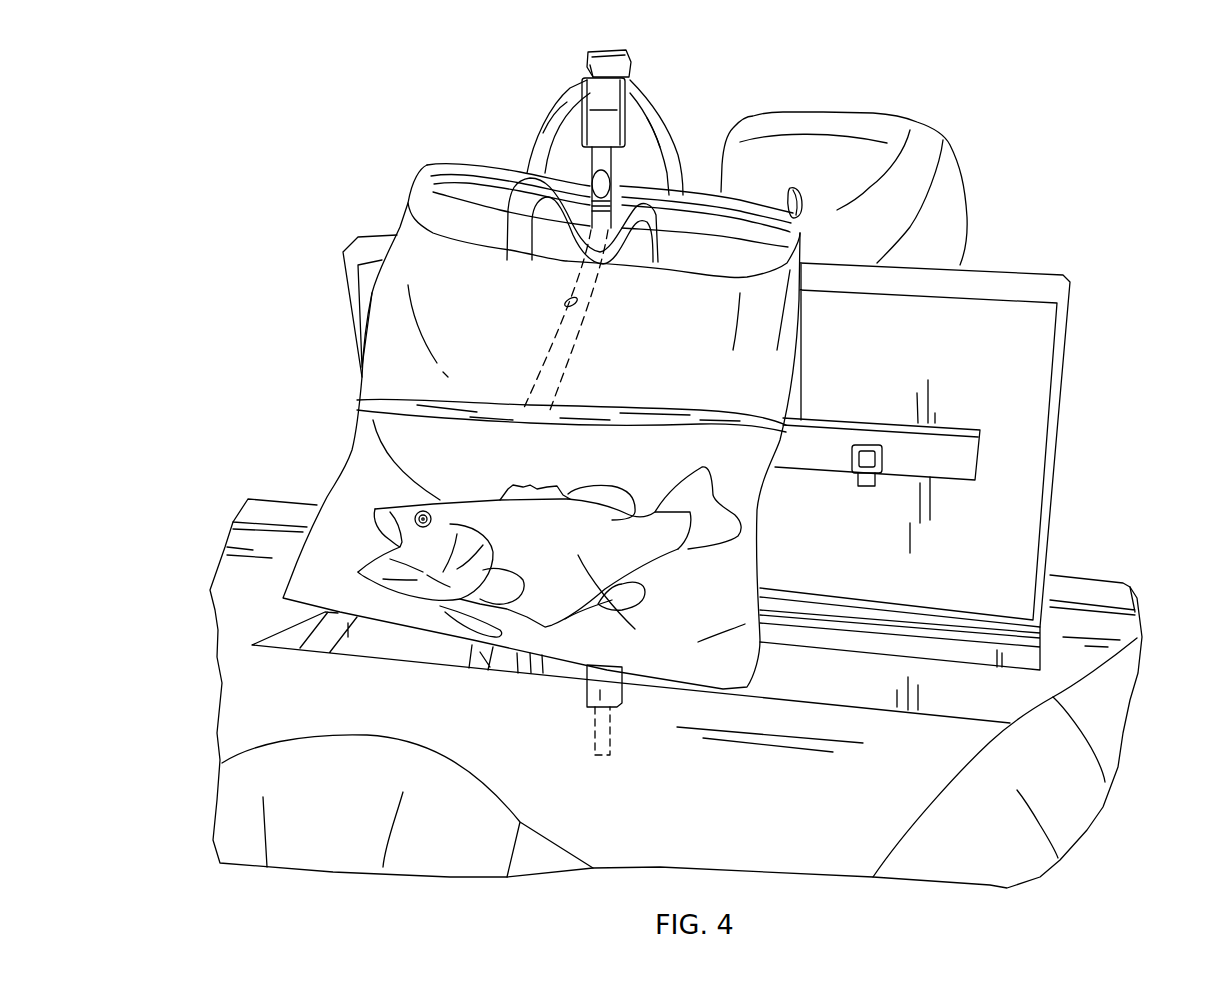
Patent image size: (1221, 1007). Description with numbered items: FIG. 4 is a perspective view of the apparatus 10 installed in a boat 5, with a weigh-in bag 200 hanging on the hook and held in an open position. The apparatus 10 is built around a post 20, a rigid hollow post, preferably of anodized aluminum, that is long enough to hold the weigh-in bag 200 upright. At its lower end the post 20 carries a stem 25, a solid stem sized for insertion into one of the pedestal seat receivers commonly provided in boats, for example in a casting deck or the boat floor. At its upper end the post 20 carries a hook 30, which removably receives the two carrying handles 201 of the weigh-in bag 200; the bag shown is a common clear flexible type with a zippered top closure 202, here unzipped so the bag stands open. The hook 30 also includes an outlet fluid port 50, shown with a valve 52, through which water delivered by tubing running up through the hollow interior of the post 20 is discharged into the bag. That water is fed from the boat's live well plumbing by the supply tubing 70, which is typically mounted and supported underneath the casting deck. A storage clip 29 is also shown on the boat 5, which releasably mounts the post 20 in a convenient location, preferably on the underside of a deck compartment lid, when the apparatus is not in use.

The boat 5 is at (1107, 592).
The apparatus 10 is at (509, 96).
The post 20 is at (604, 699).
The stem 25 is at (593, 743).
The storage clip 29 is at (853, 480).
The hook 30 is at (632, 58).
The outlet fluid port 50 is at (541, 283).
The valve 52 is at (596, 182).
The supply tubing 70 is at (484, 652).
The weigh-in bag 200 is at (357, 401).
The handles 201 is at (658, 147).
The zippered top closure 202 is at (792, 195).